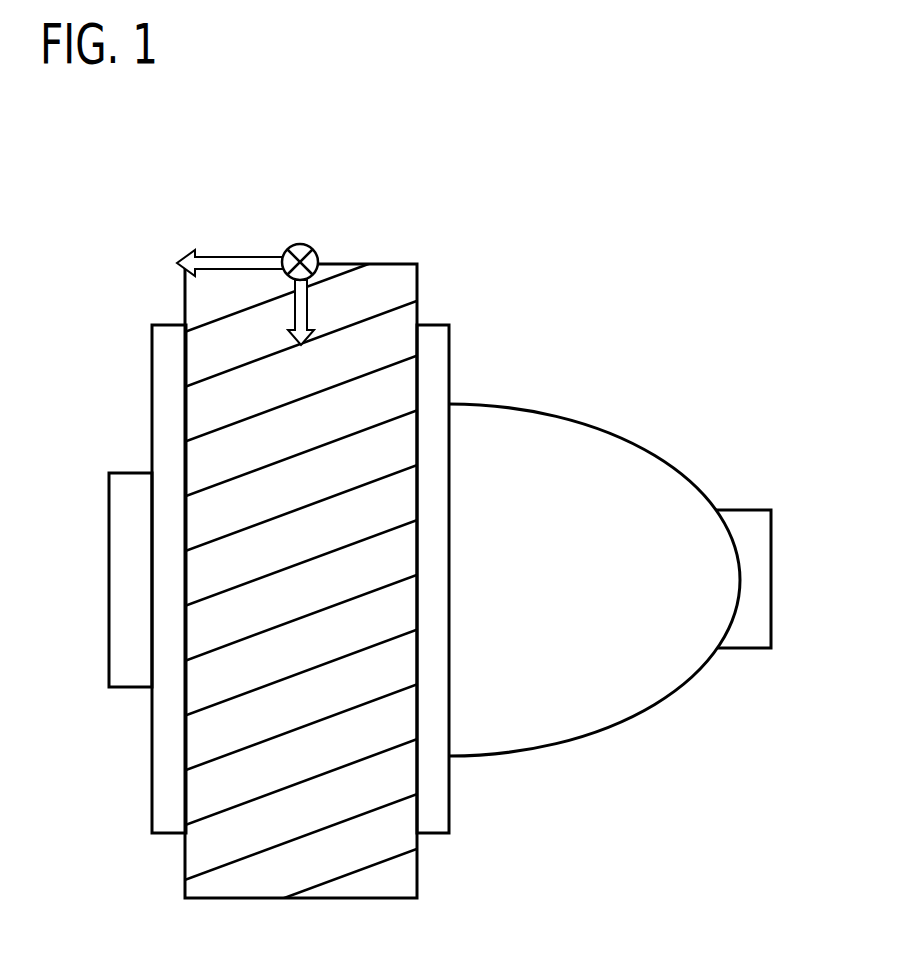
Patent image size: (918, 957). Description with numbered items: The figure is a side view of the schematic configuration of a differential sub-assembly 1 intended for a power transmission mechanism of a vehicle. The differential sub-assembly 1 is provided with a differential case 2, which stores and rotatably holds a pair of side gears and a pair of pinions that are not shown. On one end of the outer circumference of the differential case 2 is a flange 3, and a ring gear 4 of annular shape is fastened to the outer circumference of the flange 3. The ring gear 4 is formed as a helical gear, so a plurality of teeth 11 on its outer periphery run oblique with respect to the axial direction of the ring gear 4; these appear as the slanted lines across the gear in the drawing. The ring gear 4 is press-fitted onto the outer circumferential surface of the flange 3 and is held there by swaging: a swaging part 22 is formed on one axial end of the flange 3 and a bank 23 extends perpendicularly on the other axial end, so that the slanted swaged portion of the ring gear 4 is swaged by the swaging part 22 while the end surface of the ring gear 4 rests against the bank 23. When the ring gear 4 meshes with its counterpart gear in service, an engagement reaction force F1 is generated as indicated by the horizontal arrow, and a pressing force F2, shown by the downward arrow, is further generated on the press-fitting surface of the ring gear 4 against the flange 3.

The differential sub-assembly 1 is at (450, 223).
The differential case 2 is at (509, 405).
The flange 3 is at (300, 579).
The ring gear 4 is at (285, 591).
The teeth 11 is at (245, 691).
The swaging part 22 is at (165, 410).
The bank 23 is at (437, 349).
The engagement reaction force F1 is at (227, 262).
The pressing force F2 is at (302, 313).